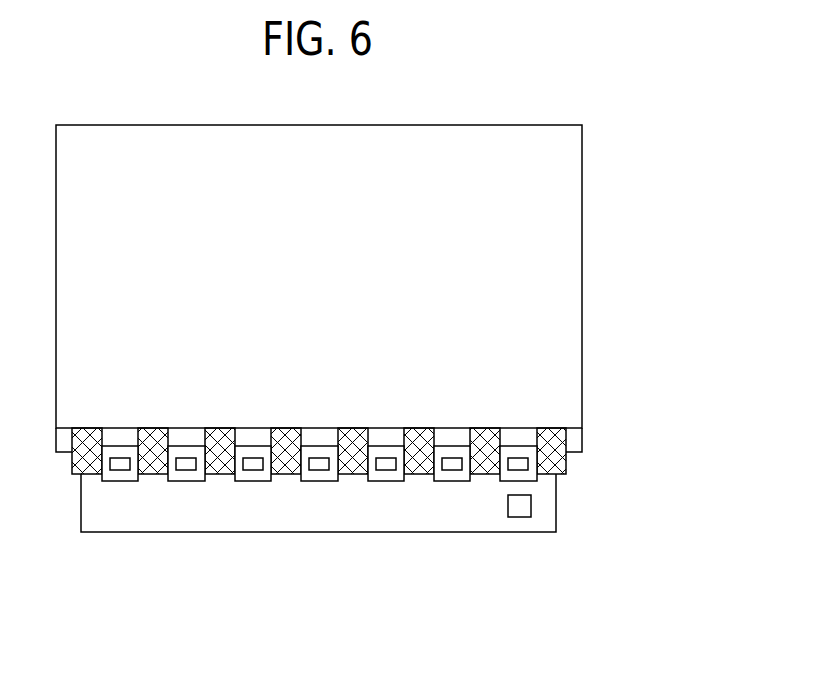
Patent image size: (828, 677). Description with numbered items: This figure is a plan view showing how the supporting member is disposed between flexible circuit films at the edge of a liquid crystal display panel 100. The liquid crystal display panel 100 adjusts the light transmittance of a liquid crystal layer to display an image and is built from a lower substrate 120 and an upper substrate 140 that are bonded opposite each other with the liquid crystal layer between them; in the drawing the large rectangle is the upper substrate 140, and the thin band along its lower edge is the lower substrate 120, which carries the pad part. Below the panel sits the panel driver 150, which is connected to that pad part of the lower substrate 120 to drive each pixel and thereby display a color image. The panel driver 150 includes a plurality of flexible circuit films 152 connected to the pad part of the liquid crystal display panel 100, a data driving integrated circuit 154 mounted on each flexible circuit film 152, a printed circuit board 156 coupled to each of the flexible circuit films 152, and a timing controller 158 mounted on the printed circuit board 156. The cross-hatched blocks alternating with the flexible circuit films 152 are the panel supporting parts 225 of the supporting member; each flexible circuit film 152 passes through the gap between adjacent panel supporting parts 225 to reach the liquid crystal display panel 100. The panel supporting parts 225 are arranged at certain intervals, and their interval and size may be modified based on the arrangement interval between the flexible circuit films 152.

The liquid crystal display panel 100 is at (378, 290).
The upper substrate 140 is at (577, 400).
The lower substrate 120 is at (575, 442).
The light emitting element (light source 200) 225 is at (565, 468).
The panel driver 150 is at (318, 529).
The printed circuit board 156 is at (394, 508).
The flexible circuit film 152 is at (457, 475).
The data driving integrated circuit 154 is at (450, 465).
The timing controller 158 is at (516, 536).